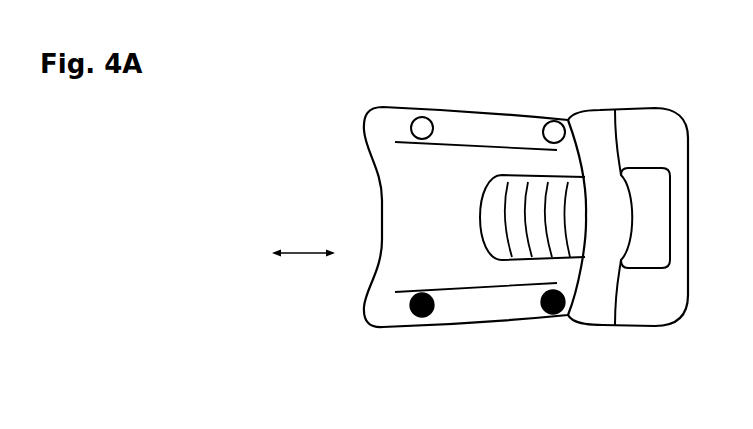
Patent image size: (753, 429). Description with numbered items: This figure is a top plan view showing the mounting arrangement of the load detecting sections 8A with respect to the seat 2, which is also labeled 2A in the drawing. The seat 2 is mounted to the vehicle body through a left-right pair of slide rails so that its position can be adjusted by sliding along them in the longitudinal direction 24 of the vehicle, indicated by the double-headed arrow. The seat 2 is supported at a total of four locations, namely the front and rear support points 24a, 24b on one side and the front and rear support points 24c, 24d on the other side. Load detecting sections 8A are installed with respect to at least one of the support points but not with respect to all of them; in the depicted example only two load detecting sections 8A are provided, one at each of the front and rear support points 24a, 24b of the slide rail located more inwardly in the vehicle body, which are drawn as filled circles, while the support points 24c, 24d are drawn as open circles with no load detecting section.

The seat 2 is at (475, 217).
The buckle body 2A is at (378, 205).
The longitudinal direction 24 is at (303, 242).
The front support point 24a is at (413, 313).
The rear support point 24b is at (544, 311).
The support point 24c is at (428, 118).
The support point 24d is at (556, 122).
The load detecting section 8A is at (472, 342).